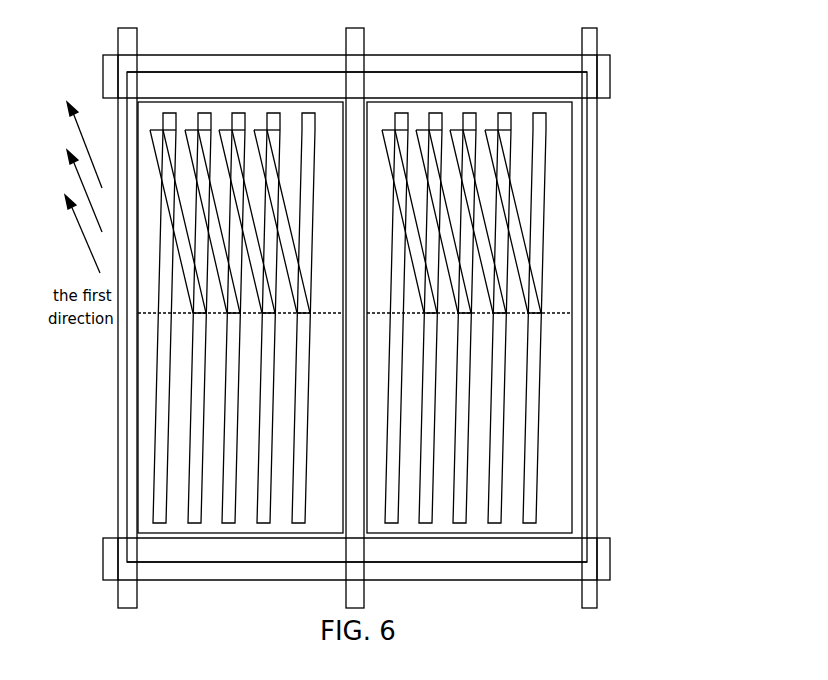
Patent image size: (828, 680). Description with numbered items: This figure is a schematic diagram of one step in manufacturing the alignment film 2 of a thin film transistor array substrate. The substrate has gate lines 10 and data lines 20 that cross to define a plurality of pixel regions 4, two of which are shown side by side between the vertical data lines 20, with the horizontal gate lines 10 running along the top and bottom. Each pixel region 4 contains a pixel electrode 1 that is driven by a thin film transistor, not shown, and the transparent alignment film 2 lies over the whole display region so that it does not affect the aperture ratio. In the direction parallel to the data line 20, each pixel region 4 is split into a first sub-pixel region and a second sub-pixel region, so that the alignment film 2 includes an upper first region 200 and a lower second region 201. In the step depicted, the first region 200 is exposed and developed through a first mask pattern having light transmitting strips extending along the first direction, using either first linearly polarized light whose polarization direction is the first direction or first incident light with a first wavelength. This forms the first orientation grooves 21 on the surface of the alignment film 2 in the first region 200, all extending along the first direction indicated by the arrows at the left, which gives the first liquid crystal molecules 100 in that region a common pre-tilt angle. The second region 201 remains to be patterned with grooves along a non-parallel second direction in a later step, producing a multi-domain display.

The pixel electrode 1 is at (567, 200).
The alignment film 2 is at (268, 88).
The pixel region 4 is at (198, 97).
The gate line 10 is at (600, 80).
The data line 20 is at (588, 42).
The orientation groove 21 is at (513, 160).
The first liquid crystal molecules 100 is at (563, 258).
The first region 200 is at (593, 157).
The second region 201 is at (595, 443).